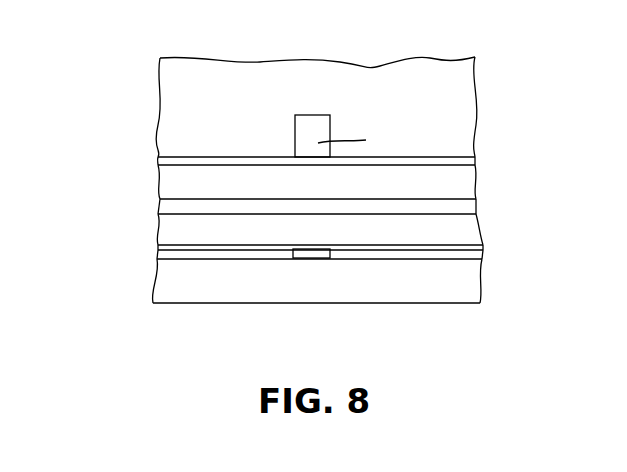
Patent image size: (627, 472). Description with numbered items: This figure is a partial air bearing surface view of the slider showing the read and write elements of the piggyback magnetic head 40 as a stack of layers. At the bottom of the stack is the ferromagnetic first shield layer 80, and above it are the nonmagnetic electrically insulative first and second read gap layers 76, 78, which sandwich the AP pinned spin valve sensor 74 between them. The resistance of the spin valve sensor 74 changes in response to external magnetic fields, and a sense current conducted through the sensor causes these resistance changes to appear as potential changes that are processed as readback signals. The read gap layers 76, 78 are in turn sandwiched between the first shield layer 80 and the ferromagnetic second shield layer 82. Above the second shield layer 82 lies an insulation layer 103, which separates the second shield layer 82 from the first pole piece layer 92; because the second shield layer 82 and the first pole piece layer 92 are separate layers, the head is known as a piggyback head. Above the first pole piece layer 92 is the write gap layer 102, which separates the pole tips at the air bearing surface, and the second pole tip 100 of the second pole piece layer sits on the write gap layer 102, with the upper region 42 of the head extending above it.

The piggyback magnetic head 40 is at (506, 69).
The upper layer 42 is at (162, 88).
The second pole tip 100 is at (305, 118).
The write gap layer 102 is at (230, 160).
The first pole piece layer 92 is at (165, 183).
The insulation layer 103 is at (468, 207).
The second shield layer 82 is at (160, 235).
The second read gap layer 78 is at (437, 248).
The first read gap layer 76 is at (218, 262).
The AP pinned spin valve sensor 74 is at (308, 255).
The first shield layer 80 is at (468, 285).